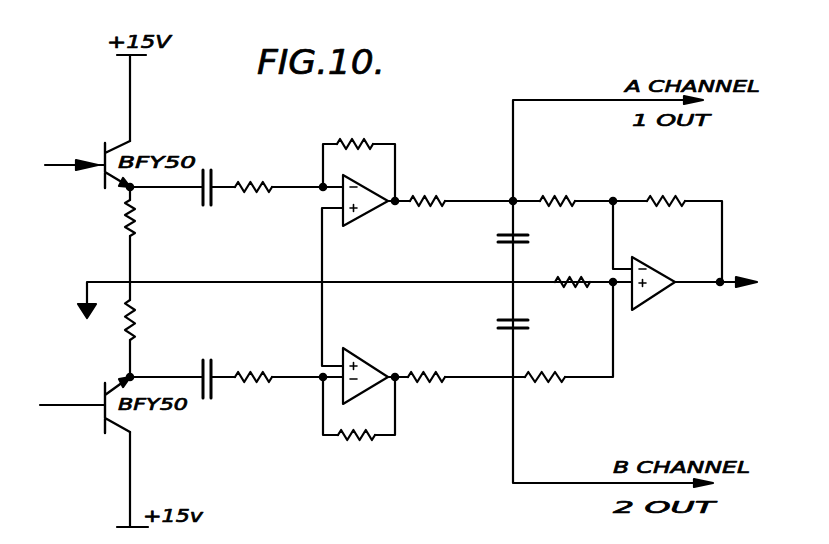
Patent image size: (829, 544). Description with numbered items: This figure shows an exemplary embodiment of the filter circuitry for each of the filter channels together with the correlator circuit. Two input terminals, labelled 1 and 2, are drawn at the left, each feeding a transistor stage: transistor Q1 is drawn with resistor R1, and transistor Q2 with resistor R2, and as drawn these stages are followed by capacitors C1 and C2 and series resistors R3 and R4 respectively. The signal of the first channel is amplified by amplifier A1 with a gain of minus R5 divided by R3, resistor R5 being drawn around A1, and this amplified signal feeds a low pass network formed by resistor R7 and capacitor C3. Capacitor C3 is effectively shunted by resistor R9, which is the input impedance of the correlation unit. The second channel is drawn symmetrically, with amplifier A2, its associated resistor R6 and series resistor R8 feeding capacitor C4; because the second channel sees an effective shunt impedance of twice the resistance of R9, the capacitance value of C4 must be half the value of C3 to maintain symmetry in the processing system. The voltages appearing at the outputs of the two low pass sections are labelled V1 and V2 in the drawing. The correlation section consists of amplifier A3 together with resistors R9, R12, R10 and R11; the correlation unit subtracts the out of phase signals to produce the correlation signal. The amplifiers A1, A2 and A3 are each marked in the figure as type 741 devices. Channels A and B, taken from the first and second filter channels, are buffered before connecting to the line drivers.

The input 1 is at (74, 176).
The input 2 is at (72, 394).
The 741 operational amplifier 741 is at (524, 287).
The transistor Q1 (BFY50) Q1 is at (95, 160).
The transistor Q2 (BFY50) Q2 is at (98, 410).
The resistor R1 is at (111, 218).
The resistor R2 is at (148, 320).
The resistor R3 is at (257, 204).
The resistor R4 is at (259, 396).
The resistor R5 is at (358, 133).
The feedback resistor R6 is at (355, 454).
The resistor R7 is at (430, 217).
The resistor R8 is at (426, 365).
The correlation unit input resistor R9 is at (564, 189).
The resistor R10 is at (577, 297).
The resistor R11 is at (548, 394).
The resistor R12 is at (670, 191).
The coupling capacitor C1 is at (203, 204).
The coupling capacitor C2 is at (205, 397).
The low pass capacitor C3 is at (532, 245).
The capacitor C4 is at (531, 334).
The amplifier A1 is at (365, 212).
The operational amplifier A2 is at (365, 371).
The amplifier A3 is at (663, 289).
The voltage V1 is at (493, 182).
The voltage V2 is at (489, 403).